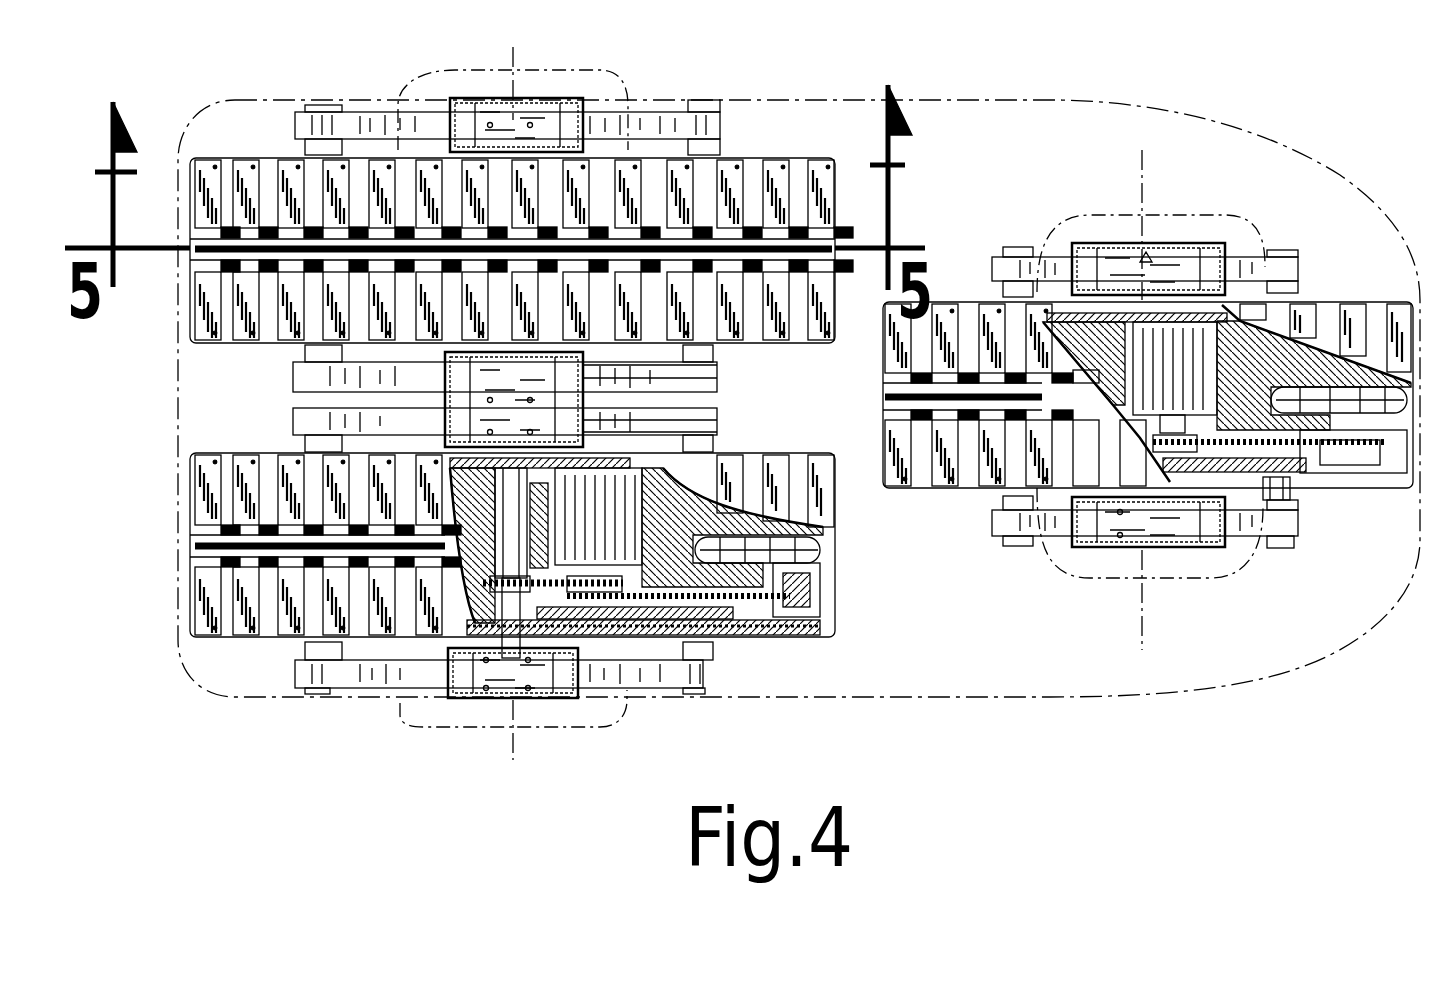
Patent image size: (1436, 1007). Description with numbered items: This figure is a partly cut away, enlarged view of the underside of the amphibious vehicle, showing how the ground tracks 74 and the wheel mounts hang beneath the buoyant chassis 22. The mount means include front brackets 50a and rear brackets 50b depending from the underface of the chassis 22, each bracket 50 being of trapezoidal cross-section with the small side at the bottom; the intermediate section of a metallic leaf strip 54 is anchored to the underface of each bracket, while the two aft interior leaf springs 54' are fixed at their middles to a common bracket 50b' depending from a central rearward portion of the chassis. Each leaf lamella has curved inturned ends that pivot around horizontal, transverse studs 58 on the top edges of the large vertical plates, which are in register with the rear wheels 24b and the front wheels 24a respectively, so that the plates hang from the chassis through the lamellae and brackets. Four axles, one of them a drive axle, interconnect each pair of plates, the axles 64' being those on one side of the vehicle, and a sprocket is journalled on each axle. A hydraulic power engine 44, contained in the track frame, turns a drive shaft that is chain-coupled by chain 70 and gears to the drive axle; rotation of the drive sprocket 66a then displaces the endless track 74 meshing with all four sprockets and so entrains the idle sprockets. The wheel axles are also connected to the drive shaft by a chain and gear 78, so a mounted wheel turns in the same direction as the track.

The buoyant chassis 22 is at (1058, 106).
The front wheels 24a is at (1113, 214).
The rear wheels 24b is at (537, 70).
The hydraulic power engine 44 is at (625, 456).
The bracket 50 is at (1083, 243).
The front bracket 50a is at (1168, 547).
The rear bracket 50b is at (514, 413).
The common bracket 50b' is at (617, 399).
The metallic leaf strip 54 is at (796, 387).
The interior metallic leaf spring 54' is at (460, 398).
The stud 58 is at (322, 104).
The axle 64' is at (1353, 492).
The drive sprocket 66a is at (827, 540).
The chain 70 is at (733, 638).
The endless track 74 is at (832, 158).
The gear 78 is at (1298, 475).